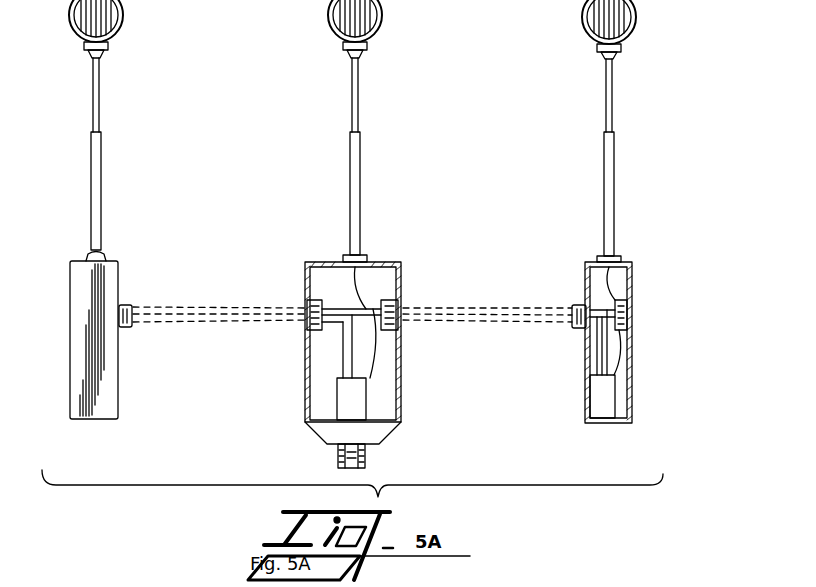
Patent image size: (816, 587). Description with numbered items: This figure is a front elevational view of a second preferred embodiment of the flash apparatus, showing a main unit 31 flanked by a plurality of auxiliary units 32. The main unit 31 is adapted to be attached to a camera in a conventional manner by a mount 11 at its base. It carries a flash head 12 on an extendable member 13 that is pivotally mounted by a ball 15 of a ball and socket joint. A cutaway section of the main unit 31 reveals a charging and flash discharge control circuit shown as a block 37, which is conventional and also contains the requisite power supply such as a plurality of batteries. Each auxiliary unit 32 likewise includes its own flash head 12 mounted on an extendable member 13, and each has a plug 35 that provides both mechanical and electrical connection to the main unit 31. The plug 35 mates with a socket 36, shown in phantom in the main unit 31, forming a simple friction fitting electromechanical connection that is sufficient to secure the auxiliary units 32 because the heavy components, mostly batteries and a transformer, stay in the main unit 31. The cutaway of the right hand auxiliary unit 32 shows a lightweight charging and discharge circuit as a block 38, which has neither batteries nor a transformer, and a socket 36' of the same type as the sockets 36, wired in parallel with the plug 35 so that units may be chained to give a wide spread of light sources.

The flash head 12 is at (119, 29).
The extendable member 13 is at (110, 134).
The auxiliary unit 32 is at (660, 262).
The plug 35 is at (127, 305).
The main unit 31 is at (401, 282).
The ball 15 is at (366, 262).
The socket 36 is at (353, 339).
The charging and flash discharge control circuit 37 is at (356, 406).
The mount 11 is at (366, 458).
The socket 36' is at (639, 321).
The charging and discharge circuit 38 is at (600, 394).